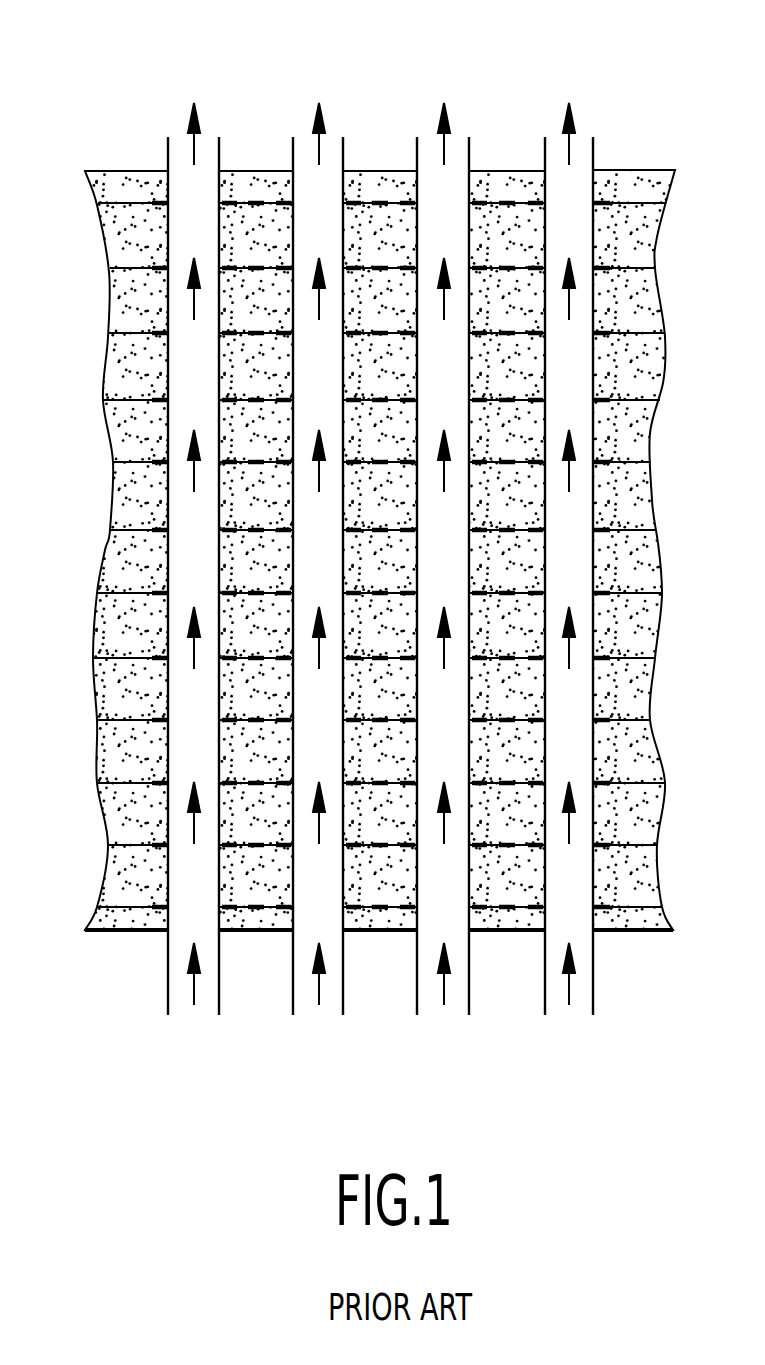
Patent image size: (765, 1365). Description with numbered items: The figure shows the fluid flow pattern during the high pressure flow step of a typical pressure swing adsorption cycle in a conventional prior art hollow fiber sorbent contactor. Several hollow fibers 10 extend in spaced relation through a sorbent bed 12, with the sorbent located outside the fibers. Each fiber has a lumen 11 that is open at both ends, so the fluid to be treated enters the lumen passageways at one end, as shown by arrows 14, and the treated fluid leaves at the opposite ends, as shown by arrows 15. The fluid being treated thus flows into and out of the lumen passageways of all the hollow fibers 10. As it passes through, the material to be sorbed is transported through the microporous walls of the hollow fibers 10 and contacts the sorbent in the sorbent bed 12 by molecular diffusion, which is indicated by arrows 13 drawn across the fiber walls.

The hollow fibers 10 is at (545, 157).
The lumen 11 is at (458, 223).
The sorbent bed 12 is at (372, 193).
The arrows 13 is at (245, 200).
The arrows 14 is at (319, 992).
The arrows 15 is at (445, 112).